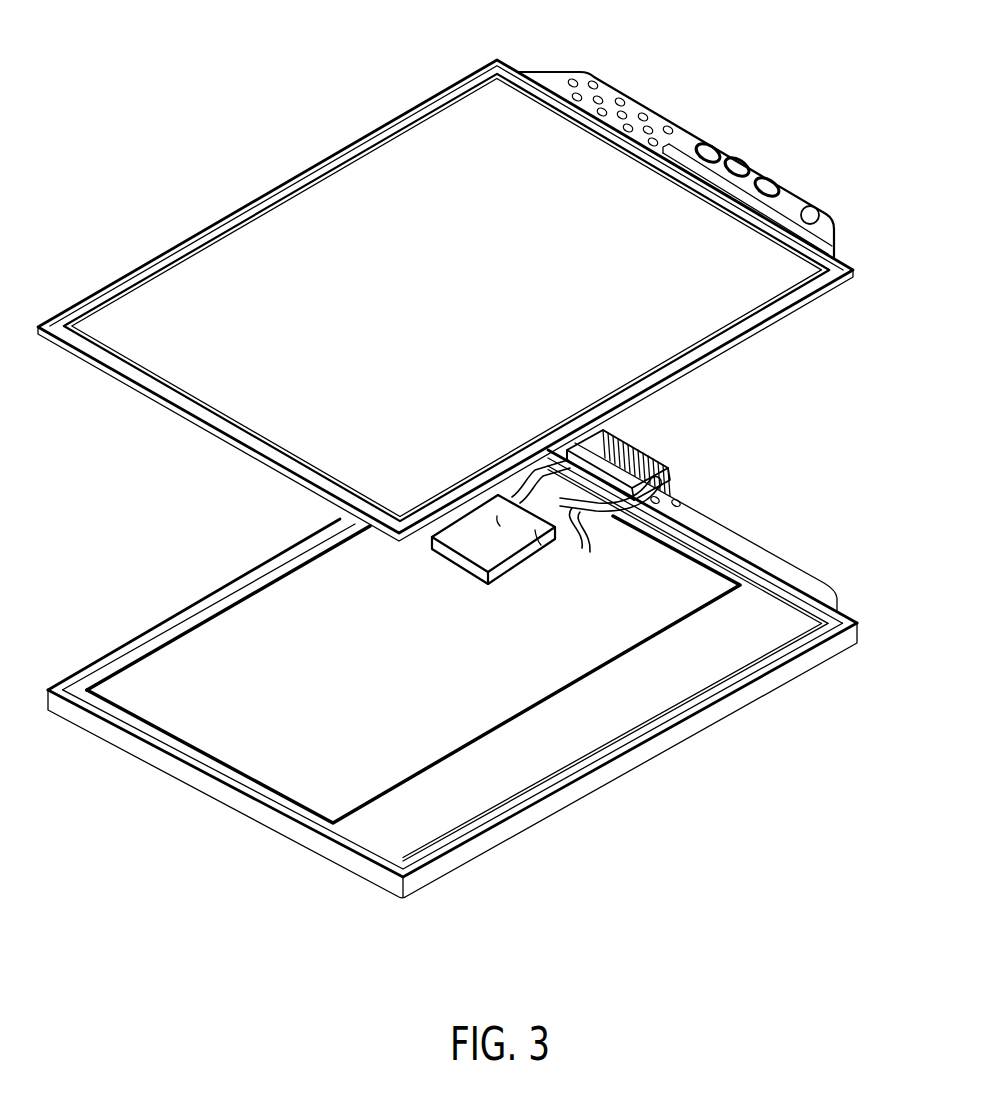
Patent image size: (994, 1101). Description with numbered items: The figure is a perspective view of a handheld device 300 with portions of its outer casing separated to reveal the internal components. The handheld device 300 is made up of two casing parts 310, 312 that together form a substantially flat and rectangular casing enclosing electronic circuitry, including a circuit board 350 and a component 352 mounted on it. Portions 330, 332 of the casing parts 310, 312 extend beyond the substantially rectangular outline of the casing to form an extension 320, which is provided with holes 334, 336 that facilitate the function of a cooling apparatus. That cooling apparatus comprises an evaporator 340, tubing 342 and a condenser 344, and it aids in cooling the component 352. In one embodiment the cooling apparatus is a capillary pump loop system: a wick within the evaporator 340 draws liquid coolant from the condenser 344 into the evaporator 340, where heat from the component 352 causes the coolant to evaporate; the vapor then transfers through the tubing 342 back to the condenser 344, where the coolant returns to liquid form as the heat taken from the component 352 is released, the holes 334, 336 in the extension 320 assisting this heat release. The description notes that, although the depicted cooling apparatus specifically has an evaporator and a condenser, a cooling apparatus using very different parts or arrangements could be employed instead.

The handheld device 300 is at (182, 151).
The casing part 310 is at (117, 287).
The casing part 312 is at (77, 718).
The extension 320 is at (748, 505).
The portion of casing part 330 is at (547, 79).
The portion of casing part 332 is at (758, 551).
The holes 334 is at (599, 71).
The holes 336 is at (683, 494).
The evaporator 340 is at (467, 540).
The tubing 342 is at (584, 548).
The condenser 344 is at (640, 453).
The circuit board 350 is at (520, 694).
The component 352 is at (510, 562).